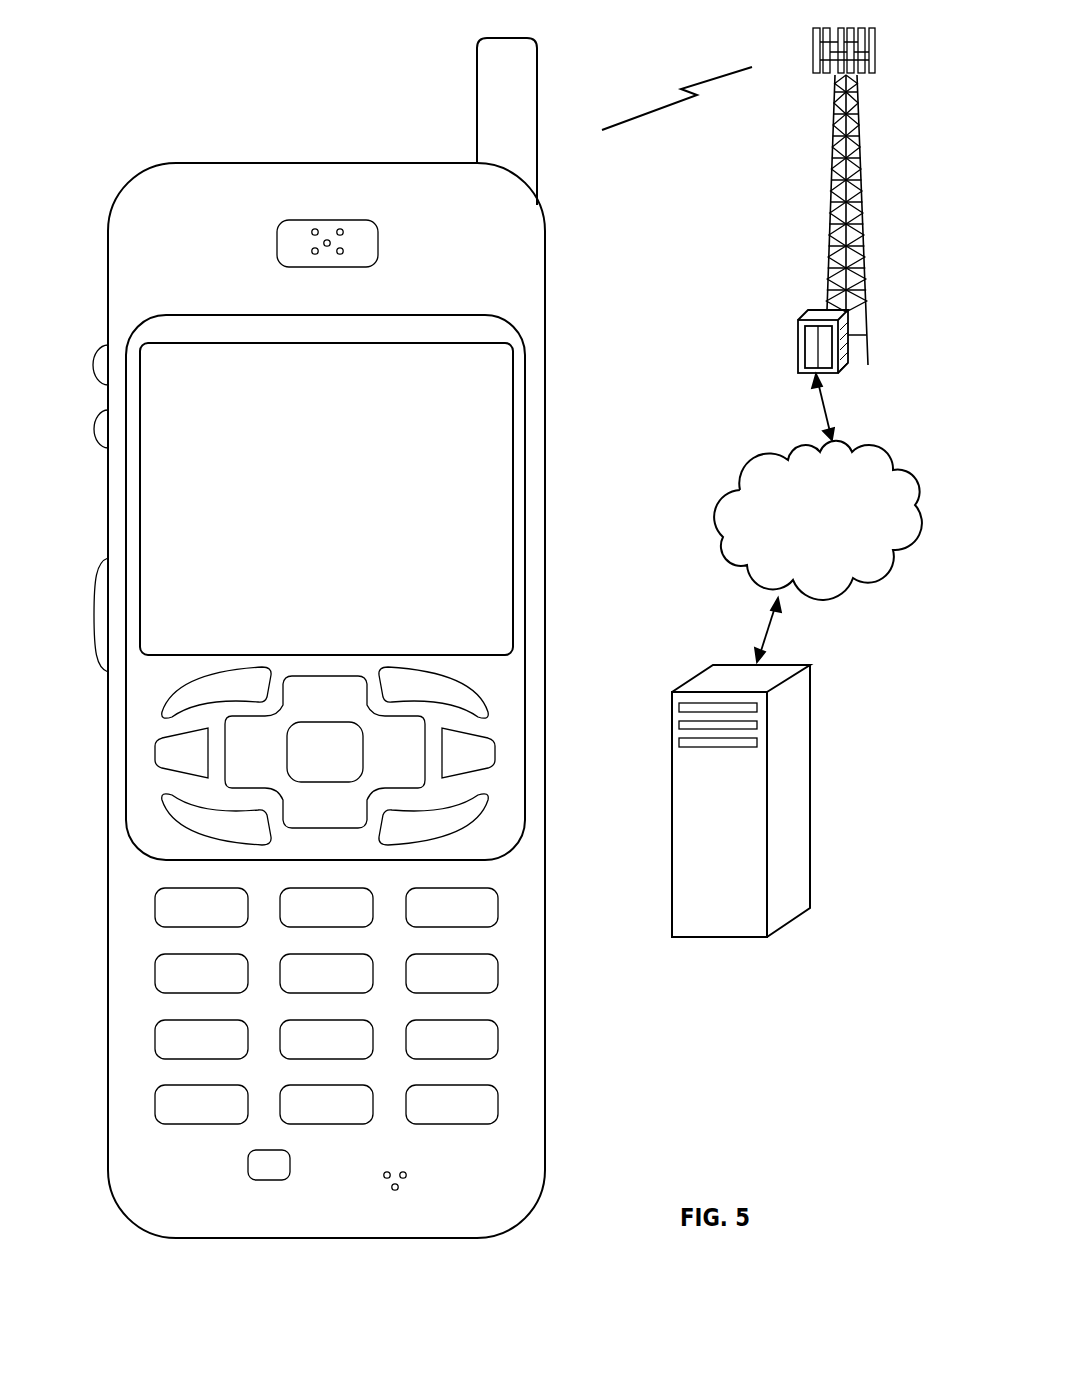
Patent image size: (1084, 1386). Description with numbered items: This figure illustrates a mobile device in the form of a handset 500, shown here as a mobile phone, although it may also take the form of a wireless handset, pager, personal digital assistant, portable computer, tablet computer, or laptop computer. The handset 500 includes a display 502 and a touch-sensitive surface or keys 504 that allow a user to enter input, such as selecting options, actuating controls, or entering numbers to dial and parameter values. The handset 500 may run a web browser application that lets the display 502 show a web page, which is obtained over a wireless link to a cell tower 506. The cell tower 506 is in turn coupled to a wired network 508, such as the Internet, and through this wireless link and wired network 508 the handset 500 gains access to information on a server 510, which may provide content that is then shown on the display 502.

The handset 500 is at (359, 651).
The display 502 is at (515, 357).
The keys 504 is at (555, 663).
The cell tower 506 is at (828, 213).
The wired network 508 is at (742, 577).
The server 510 is at (722, 938).